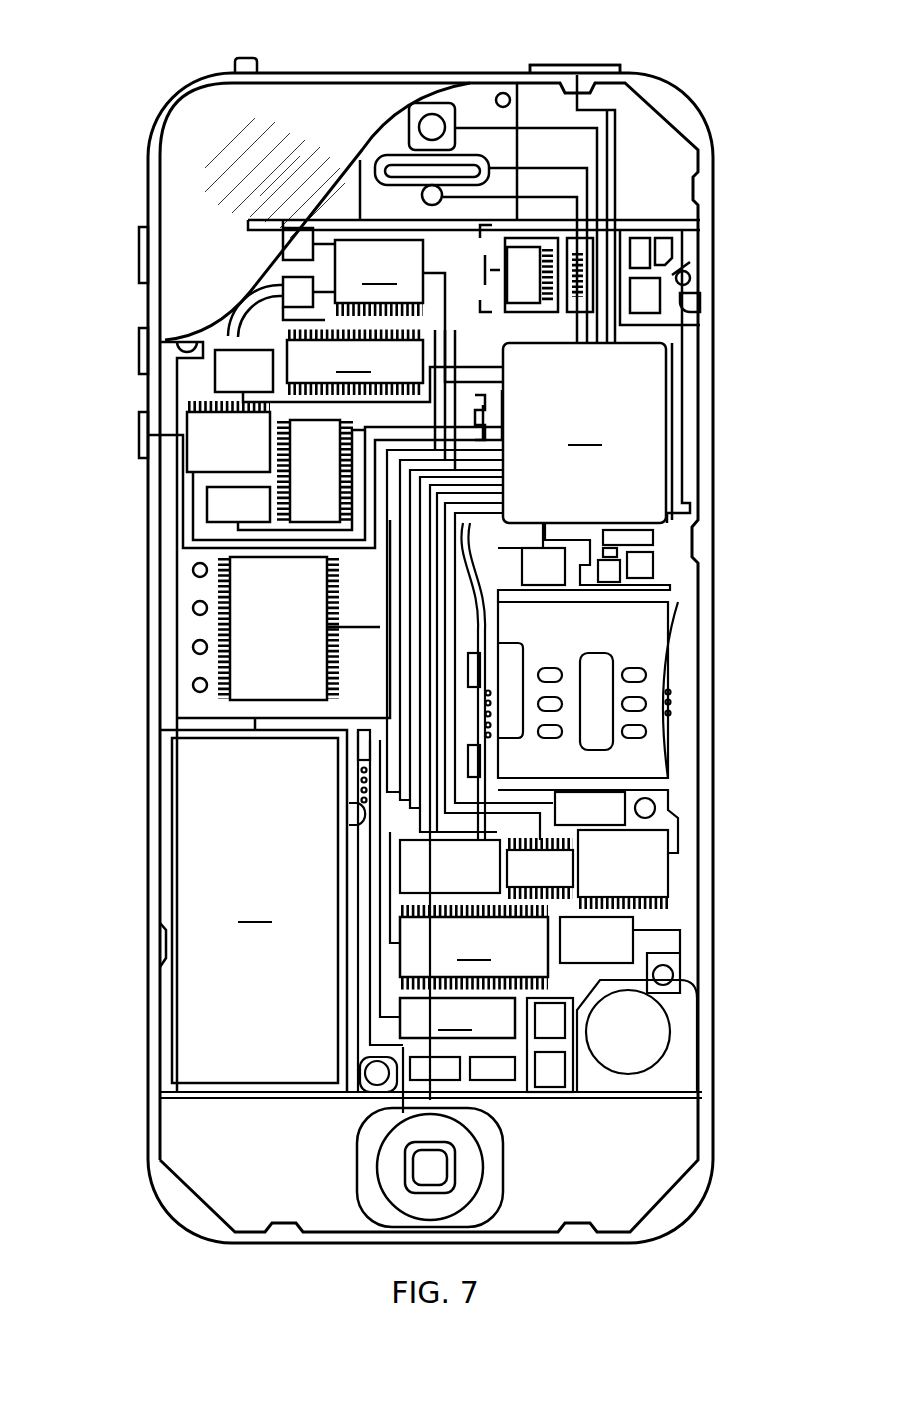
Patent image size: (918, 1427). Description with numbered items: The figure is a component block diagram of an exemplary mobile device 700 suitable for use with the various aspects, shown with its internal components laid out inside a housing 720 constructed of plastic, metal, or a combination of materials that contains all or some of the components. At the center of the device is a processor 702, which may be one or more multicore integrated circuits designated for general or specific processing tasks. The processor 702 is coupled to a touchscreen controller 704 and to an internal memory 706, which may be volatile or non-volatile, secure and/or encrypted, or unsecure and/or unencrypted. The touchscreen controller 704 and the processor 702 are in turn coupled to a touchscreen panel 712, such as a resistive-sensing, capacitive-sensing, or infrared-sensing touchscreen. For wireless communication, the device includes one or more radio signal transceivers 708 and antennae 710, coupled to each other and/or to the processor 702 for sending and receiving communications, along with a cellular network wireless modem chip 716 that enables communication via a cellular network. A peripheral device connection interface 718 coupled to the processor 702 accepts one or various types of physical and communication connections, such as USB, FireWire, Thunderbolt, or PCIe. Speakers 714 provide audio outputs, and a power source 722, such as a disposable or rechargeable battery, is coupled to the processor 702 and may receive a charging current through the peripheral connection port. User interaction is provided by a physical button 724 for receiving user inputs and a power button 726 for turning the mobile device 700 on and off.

The mobile device 700 is at (96, 70).
The processor 702 is at (562, 376).
The touchscreen controller 704 is at (379, 275).
The internal memory 706 is at (355, 362).
The radio signal transceivers 708 is at (598, 250).
The antennae 710 is at (662, 294).
The touchscreen panel 712 is at (185, 170).
The speakers 714 is at (382, 158).
The cellular network wireless modem chip 716 is at (474, 947).
The peripheral device connection interface 718 is at (457, 1018).
The housing 720 is at (713, 1120).
The power source 722 is at (255, 910).
The physical button 724 is at (440, 1177).
The power button 726 is at (575, 67).